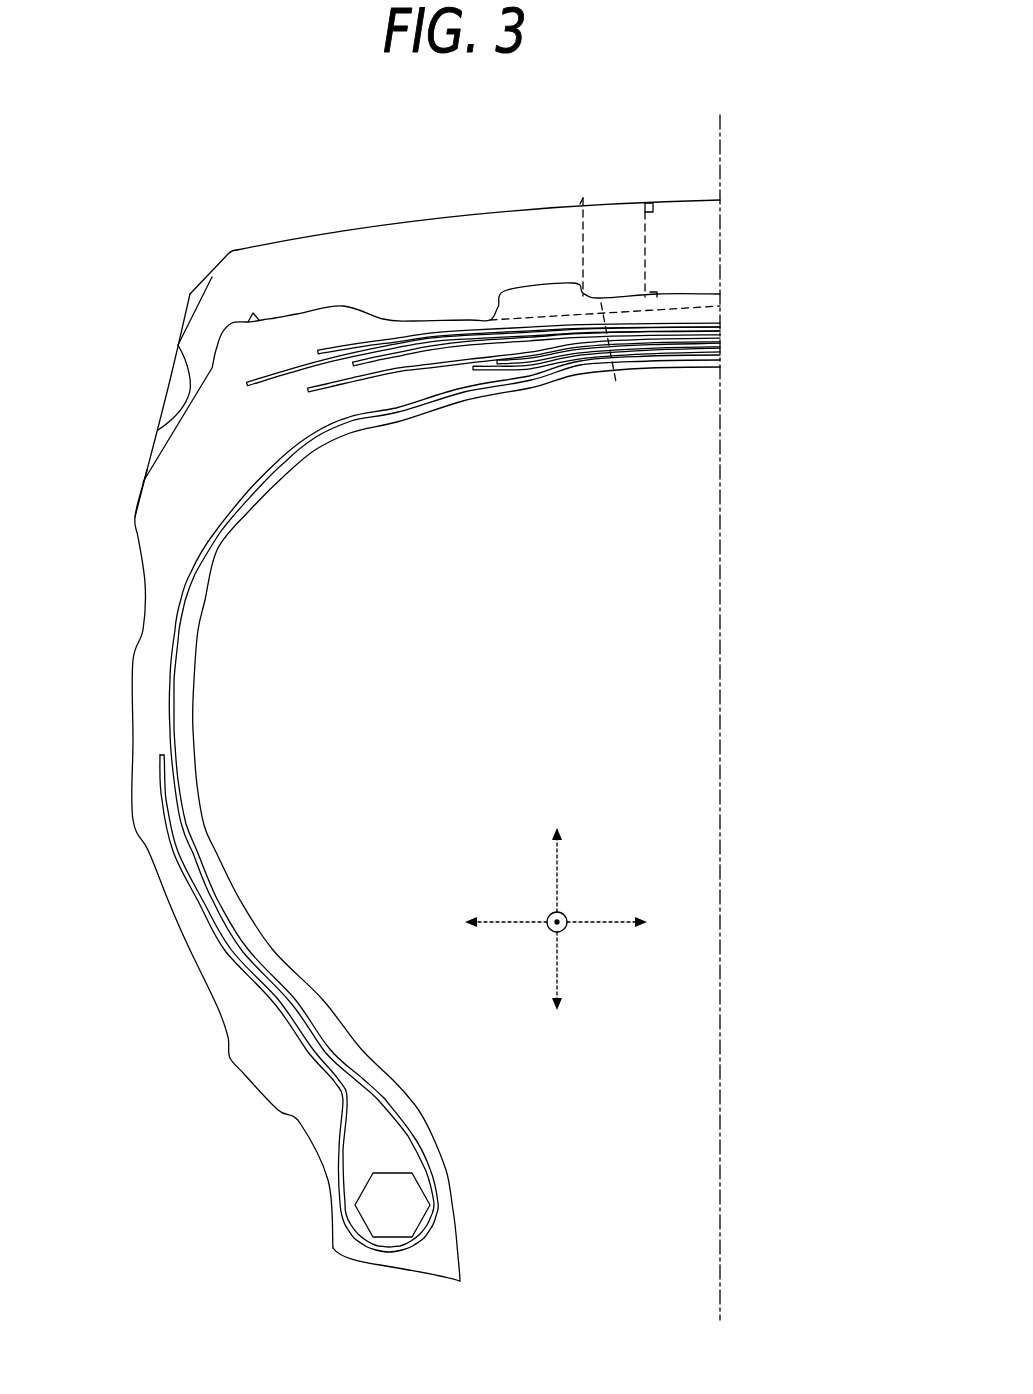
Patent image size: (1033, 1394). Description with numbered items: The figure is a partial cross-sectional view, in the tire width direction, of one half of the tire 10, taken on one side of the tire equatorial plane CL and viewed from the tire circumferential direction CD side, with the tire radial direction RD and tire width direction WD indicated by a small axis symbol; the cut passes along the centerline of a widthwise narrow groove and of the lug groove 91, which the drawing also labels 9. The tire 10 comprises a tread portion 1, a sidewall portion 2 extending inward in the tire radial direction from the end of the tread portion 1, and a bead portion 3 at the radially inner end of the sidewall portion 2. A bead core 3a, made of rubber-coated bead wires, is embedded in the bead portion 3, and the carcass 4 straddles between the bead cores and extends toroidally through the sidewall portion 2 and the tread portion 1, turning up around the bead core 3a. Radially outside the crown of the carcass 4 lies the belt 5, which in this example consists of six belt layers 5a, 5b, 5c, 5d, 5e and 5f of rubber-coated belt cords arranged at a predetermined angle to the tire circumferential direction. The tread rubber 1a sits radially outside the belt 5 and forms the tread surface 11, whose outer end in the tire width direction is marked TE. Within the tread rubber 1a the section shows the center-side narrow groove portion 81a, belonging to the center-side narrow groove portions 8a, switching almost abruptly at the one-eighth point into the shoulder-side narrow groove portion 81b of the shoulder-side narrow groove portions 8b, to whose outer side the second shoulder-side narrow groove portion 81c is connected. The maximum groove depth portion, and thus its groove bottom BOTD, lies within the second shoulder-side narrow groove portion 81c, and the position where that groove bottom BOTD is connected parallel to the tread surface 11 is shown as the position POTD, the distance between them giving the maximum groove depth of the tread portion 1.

The tire 10 is at (311, 157).
The tread portion 1 is at (380, 220).
The tread rubber 1a is at (450, 240).
The tread surface 11 is at (493, 209).
The lug groove 91 is at (274, 270).
The land portion 9 is at (229, 302).
The second shoulder-side narrow groove portion 81c is at (470, 272).
The shoulder-side narrow groove portion 81b is at (542, 252).
The shoulder-side narrow groove portion 8b is at (566, 211).
The center-side narrow groove portion 81a is at (607, 270).
The center-side narrow groove portion 8a is at (650, 210).
The sidewall portion 2 is at (115, 642).
The bead portion 3 is at (278, 1150).
The bead core 3a is at (398, 1200).
The carcass 4 is at (178, 687).
The belt 5 is at (550, 328).
The belt layer 5a is at (639, 376).
The belt layer 5b is at (722, 345).
The belt layer 5c is at (722, 340).
The belt layer 5d is at (722, 333).
The belt layer 5e is at (722, 329).
The belt layer 5f is at (722, 325).
The tread edge TE is at (236, 250).
The tire equatorial plane CL is at (719, 704).
The groove bottom of the maximum groove depth portion BOTD is at (483, 314).
The OTD position POTD is at (633, 360).
The tire radial direction RD is at (557, 904).
The tire width direction WD is at (571, 919).
The tire circumferential direction CD is at (567, 908).